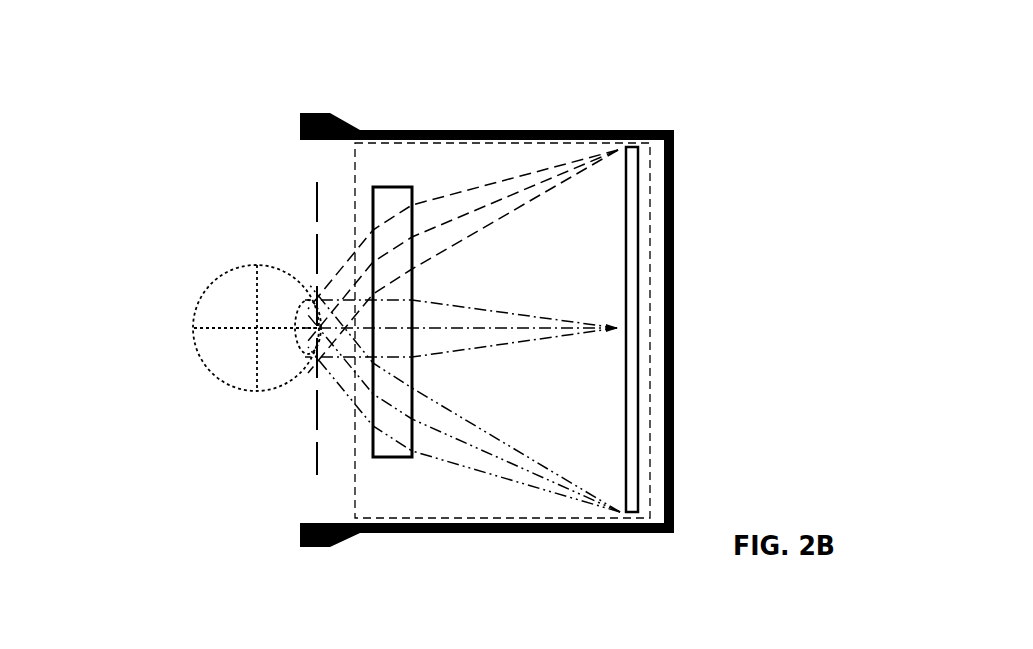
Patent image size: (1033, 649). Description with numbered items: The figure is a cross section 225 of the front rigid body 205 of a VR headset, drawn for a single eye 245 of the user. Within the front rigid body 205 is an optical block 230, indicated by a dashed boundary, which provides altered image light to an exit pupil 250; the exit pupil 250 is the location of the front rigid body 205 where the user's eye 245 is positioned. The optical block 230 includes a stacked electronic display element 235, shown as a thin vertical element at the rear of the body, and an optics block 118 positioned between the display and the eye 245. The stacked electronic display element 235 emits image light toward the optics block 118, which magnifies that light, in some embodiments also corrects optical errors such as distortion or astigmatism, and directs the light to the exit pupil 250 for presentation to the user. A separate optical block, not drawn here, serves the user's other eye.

The cross section 225 is at (96, 23).
The front rigid body 205 is at (645, 130).
The optical block 230 is at (352, 437).
The stacked electronic display element 235 is at (641, 250).
The optics block 118 is at (372, 199).
The eye 245 is at (224, 271).
The exit pupil 250 is at (308, 453).